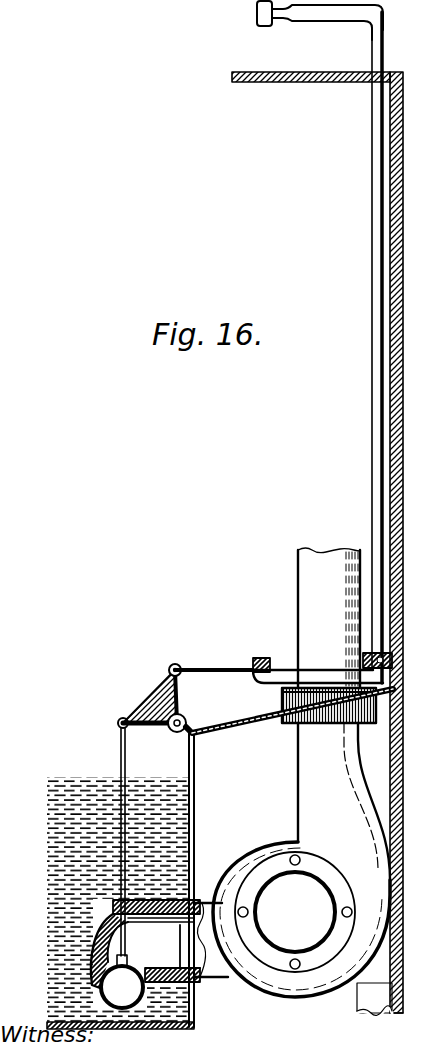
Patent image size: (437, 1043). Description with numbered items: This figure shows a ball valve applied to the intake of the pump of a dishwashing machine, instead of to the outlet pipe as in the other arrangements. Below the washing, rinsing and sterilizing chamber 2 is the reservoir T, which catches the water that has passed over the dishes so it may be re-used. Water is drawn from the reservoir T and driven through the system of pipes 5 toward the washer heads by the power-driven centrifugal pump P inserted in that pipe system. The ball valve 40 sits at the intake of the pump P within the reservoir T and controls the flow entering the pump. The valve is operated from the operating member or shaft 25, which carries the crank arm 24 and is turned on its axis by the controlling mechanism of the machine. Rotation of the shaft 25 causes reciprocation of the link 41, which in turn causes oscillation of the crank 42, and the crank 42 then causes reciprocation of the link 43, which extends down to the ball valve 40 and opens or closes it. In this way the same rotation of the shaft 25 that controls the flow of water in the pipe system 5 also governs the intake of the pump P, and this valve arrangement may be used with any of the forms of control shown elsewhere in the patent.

The washing, rinsing and sterilizing chamber 2 is at (317, 542).
The system of pipes 5 is at (329, 635).
The crank arm 24 is at (331, 20).
The operating member 25 is at (371, 220).
The ball valve 40 is at (143, 968).
The link 41 is at (224, 667).
The crank 42 is at (150, 708).
The link 43 is at (119, 760).
The reservoir T is at (195, 780).
The centrifugal pump P is at (282, 935).